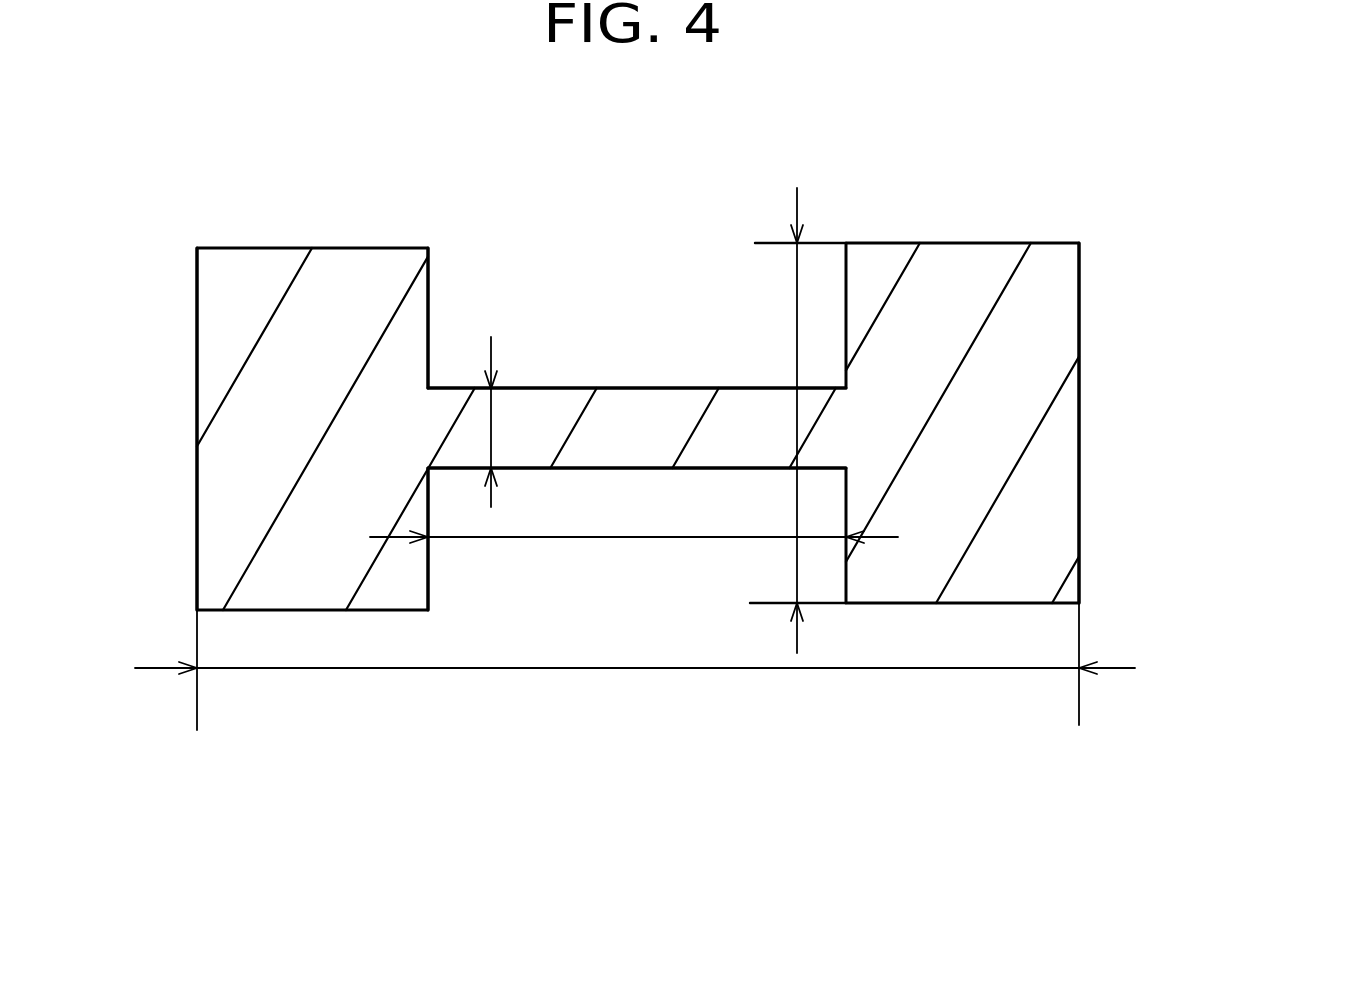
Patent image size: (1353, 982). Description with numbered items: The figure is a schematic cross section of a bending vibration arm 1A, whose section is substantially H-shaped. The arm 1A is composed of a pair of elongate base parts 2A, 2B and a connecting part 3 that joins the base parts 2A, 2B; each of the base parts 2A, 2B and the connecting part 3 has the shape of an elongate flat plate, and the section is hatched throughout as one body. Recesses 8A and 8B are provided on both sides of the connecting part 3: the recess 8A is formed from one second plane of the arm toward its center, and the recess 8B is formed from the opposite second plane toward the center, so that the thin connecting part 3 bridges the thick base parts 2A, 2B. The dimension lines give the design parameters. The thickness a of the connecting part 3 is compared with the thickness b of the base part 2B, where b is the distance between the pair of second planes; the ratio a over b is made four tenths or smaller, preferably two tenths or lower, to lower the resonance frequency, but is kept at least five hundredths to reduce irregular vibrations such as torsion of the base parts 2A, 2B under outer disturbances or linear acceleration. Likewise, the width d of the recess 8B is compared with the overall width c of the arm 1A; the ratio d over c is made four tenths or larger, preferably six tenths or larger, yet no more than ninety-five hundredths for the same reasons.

The arm 1A is at (1060, 212).
The base part 2A is at (222, 272).
The base part 2B is at (1050, 305).
The connecting part 3 is at (722, 452).
The recess 8A is at (430, 288).
The recess 8B is at (443, 600).
The thickness of the connecting part a is at (493, 425).
The thickness of the base part b is at (797, 305).
The width of the bending vibration arm c is at (597, 670).
The width of the recess d is at (553, 540).